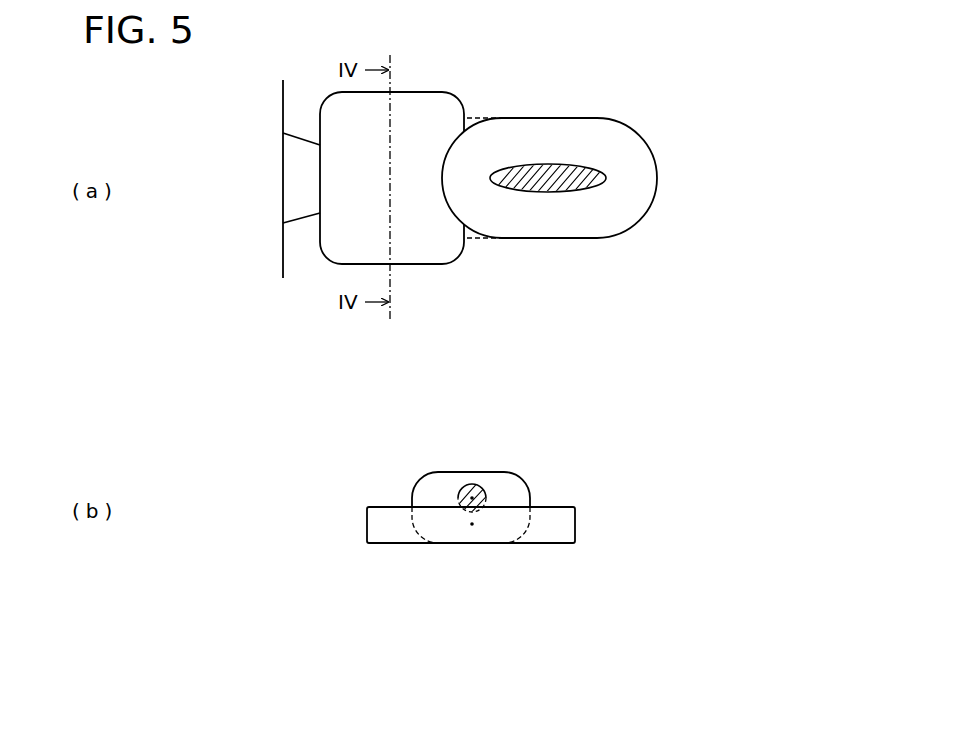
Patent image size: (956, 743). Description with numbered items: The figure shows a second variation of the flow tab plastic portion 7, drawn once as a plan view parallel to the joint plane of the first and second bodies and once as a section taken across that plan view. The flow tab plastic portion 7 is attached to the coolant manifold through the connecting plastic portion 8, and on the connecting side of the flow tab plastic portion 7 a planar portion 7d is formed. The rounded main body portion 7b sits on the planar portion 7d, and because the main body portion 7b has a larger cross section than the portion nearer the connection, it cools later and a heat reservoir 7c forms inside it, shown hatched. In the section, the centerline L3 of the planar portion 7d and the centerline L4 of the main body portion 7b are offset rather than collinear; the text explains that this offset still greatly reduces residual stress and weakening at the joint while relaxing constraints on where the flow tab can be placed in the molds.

The flow tab plastic portion 7 is at (561, 289).
The main body portion 7b is at (592, 118).
The heat reservoir 7c is at (604, 177).
The planar portion 7d is at (418, 103).
The connecting plastic portion 8 is at (302, 208).
The centerline of the planar portion L3 is at (472, 528).
The centerline of the main body portion L4 is at (473, 496).